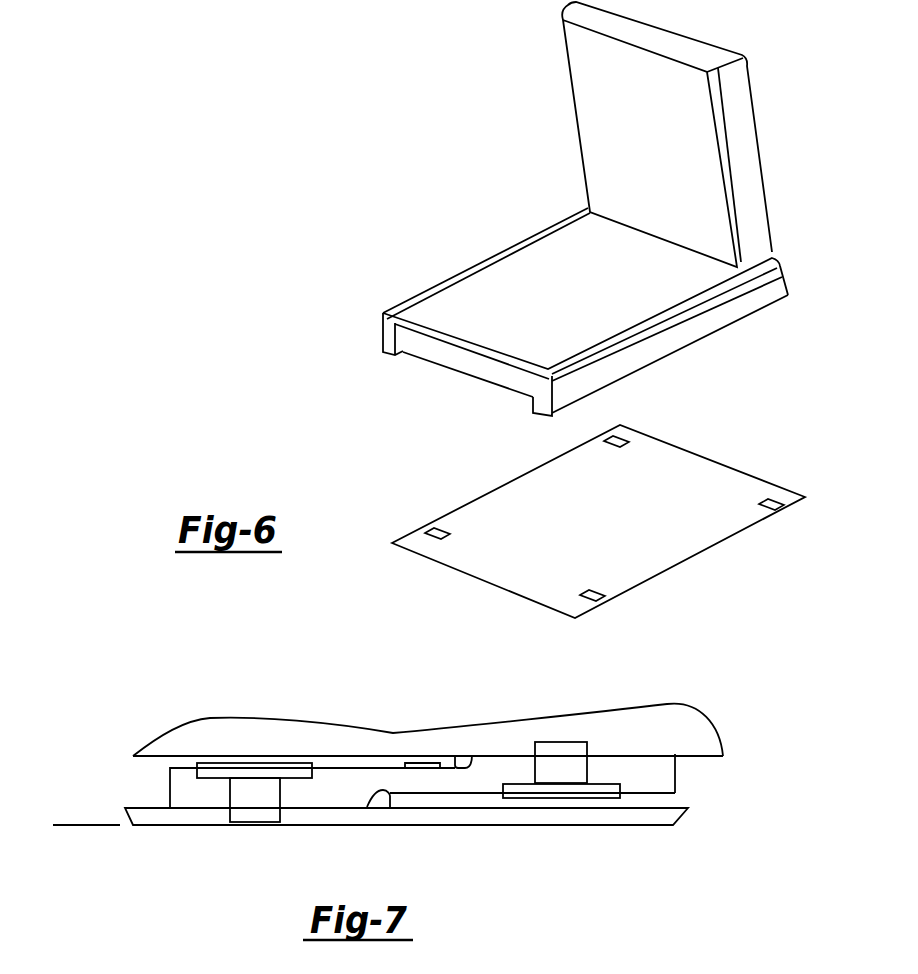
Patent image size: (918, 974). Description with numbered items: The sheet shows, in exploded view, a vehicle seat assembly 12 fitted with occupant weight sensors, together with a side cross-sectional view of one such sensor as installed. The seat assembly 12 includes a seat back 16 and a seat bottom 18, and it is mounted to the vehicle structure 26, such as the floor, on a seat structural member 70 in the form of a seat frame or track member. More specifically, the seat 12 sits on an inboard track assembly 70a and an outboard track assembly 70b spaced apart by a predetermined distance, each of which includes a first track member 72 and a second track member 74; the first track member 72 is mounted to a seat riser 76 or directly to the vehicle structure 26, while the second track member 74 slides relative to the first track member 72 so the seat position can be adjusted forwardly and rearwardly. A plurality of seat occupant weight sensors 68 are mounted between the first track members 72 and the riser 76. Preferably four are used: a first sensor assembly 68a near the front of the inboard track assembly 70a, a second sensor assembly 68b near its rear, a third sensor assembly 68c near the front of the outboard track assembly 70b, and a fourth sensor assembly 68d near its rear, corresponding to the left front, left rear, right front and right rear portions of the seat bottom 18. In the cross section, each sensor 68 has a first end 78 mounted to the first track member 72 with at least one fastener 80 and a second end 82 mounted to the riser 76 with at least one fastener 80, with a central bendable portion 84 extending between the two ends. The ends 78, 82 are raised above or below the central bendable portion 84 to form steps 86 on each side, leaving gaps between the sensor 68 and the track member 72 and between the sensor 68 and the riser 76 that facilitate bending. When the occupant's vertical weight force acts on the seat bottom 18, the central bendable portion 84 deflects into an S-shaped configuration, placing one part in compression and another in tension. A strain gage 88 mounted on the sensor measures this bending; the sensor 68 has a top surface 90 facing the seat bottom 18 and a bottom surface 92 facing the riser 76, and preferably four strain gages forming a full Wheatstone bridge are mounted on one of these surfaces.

In FIG. 6, the vehicle seat assembly 12 is at (469, 165).
In FIG. 6, the seat back 16 is at (593, 105).
In FIG. 6, the seat bottom 18 is at (546, 306).
In FIG. 7, the vehicle structure 26 is at (95, 823).
In FIG. 7, the seat occupant weight sensor 68 is at (700, 780).
In FIG. 6, the first sensor assembly 68a is at (593, 587).
In FIG. 6, the second sensor assembly 68b is at (772, 497).
In FIG. 6, the third sensor assembly 68c is at (438, 527).
In FIG. 6, the fourth sensor assembly 68d is at (620, 431).
In FIG. 6, the seat structural member 70 is at (417, 394).
In FIG. 6, the inboard track assembly 70a is at (543, 407).
In FIG. 6, the outboard track assembly 70b is at (388, 338).
In FIG. 6, the first track member 72 is at (780, 293).
In FIG. 7, the first track member 72 is at (722, 745).
In FIG. 6, the second track member 74 is at (777, 270).
In FIG. 7, the seat riser 76 is at (665, 813).
In FIG. 7, the first end 78 is at (650, 765).
In FIG. 7, the fastener 80 is at (568, 765).
In FIG. 7, the second end 82 is at (183, 795).
In FIG. 7, the central bendable portion 84 is at (404, 788).
In FIG. 7, the step 86 is at (472, 755).
In FIG. 7, the strain gage 88 is at (405, 763).
In FIG. 7, the top surface 90 is at (335, 768).
In FIG. 7, the bottom surface 92 is at (453, 795).